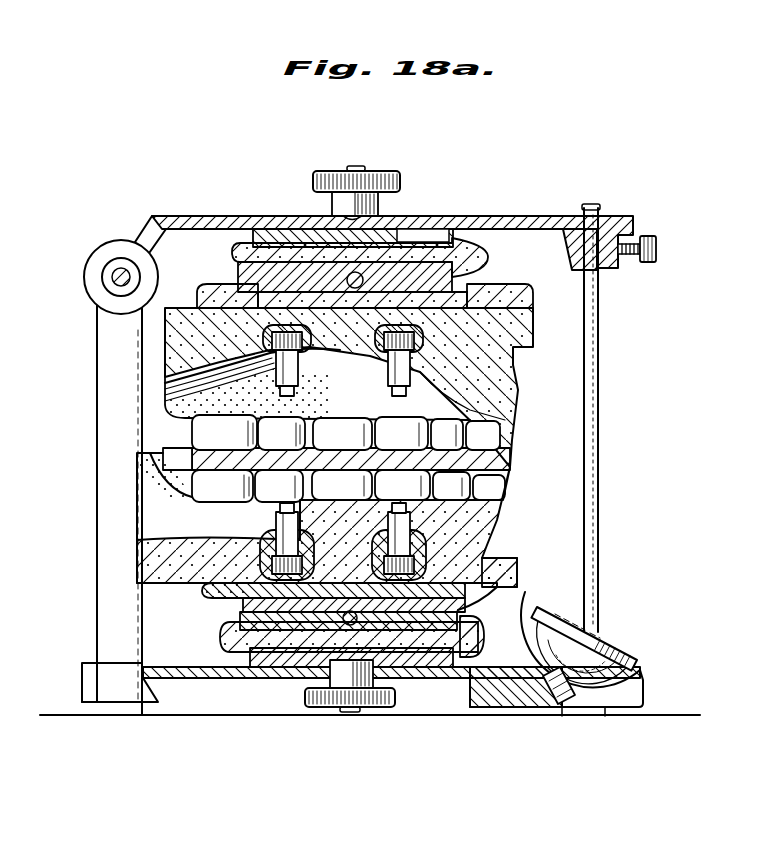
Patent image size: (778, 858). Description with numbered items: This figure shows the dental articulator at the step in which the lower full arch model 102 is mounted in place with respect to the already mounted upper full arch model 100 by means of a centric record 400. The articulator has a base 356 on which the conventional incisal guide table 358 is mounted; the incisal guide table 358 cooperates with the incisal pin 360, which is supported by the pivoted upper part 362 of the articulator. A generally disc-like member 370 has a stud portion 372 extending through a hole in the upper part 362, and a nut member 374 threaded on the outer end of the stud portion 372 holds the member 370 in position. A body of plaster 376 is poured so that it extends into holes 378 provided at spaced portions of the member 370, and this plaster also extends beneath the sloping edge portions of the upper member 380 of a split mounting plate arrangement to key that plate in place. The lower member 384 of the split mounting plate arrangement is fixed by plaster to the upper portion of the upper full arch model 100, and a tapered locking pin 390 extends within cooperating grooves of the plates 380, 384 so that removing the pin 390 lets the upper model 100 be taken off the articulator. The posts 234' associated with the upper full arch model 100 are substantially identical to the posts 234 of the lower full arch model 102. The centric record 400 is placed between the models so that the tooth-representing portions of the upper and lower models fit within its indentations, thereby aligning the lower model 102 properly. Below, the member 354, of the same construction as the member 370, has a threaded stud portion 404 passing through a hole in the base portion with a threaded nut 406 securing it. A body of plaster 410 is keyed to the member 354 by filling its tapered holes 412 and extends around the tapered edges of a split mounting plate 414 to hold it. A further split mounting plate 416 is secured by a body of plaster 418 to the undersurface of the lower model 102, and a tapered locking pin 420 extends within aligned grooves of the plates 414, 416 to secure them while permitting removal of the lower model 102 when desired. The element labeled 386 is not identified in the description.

The upper full arch model 100 is at (520, 372).
The lower full arch model 102 is at (512, 515).
The posts 234 is at (343, 541).
The posts 234' is at (343, 361).
The member 354 is at (262, 672).
The base 356 is at (190, 679).
The incisal guide table 358 is at (640, 662).
The incisal pin 360 is at (600, 345).
The upper part of the articulator 362 is at (188, 215).
The disc-like member 370 is at (448, 222).
The stud portion 372 is at (358, 171).
The nut member 374 is at (400, 186).
The body of plaster 376 is at (487, 252).
The holes 378 is at (312, 226).
The upper member of split mounting plate 380 is at (490, 270).
The lower member of split mounting plate 384 is at (505, 290).
The upper mounting plate end 386 is at (225, 300).
The tapered locking pin 390 is at (363, 280).
The centric record 400 is at (172, 457).
The threaded stud portion 404 is at (356, 711).
The threaded nut 406 is at (316, 707).
The body of plaster 410 is at (222, 640).
The tapered holes 412 is at (297, 678).
The split mounting plate 414 is at (480, 648).
The split mounting plate 416 is at (240, 606).
The body of plaster 418 is at (507, 596).
The tapered locking pin 420 is at (348, 610).